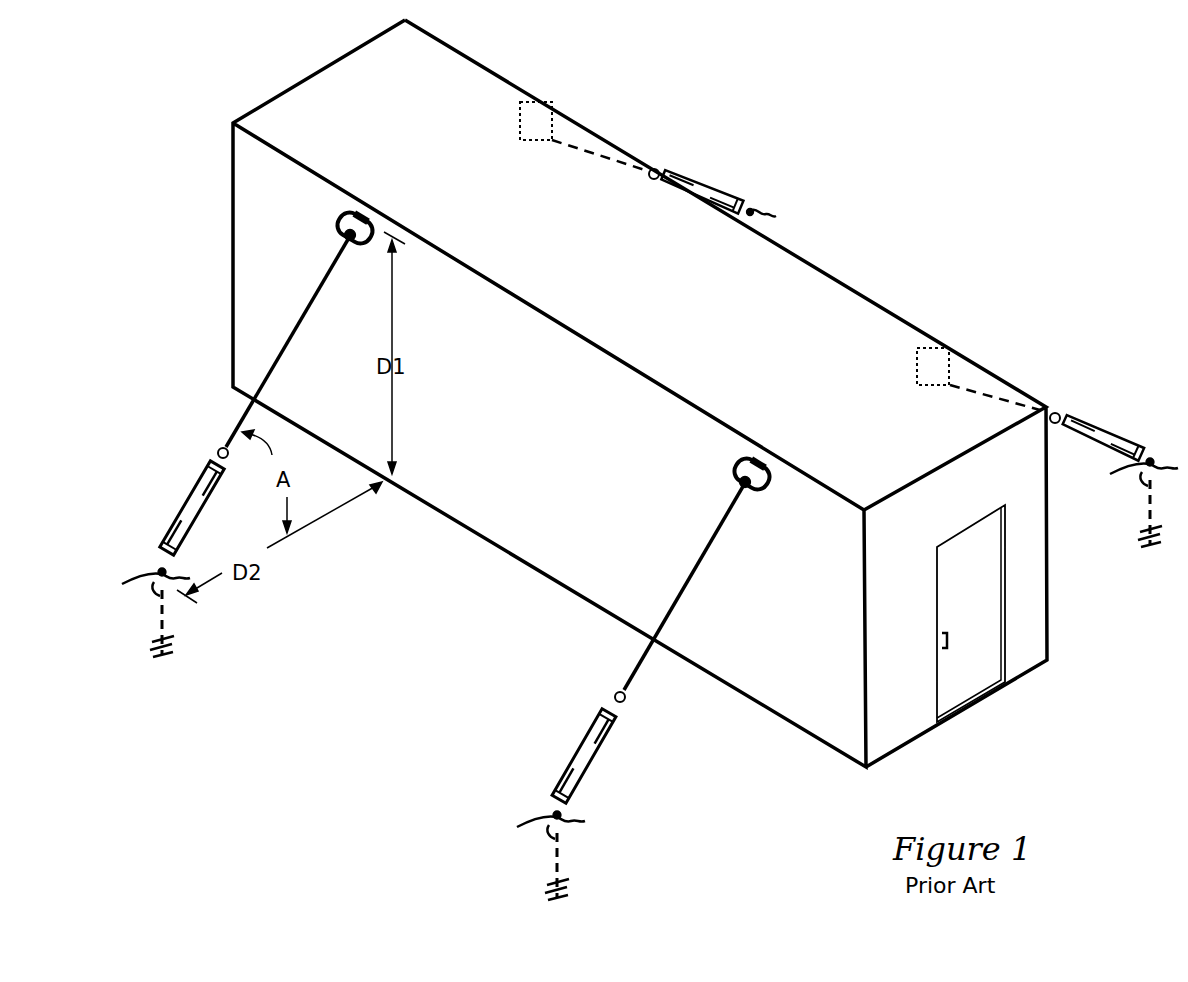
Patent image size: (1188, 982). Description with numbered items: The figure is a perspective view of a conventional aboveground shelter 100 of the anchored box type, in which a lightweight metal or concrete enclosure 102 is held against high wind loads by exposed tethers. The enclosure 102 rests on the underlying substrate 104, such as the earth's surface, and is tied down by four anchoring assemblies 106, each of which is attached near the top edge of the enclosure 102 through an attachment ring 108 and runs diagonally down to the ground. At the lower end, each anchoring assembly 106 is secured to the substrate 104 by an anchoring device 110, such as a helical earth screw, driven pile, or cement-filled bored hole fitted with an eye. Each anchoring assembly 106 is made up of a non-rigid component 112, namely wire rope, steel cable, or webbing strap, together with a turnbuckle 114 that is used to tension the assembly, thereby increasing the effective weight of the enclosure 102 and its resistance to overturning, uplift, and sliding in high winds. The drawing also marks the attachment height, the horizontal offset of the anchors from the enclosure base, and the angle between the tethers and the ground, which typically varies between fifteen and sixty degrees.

The aboveground shelter 100 is at (910, 162).
The enclosure 102 is at (823, 275).
The substrate 104 is at (440, 656).
The anchoring assembly 106 is at (667, 677).
The attachment ring 108 is at (765, 489).
The anchoring device 110 is at (571, 855).
The non-rigid component 112 is at (682, 598).
The turnbuckle 114 is at (596, 757).